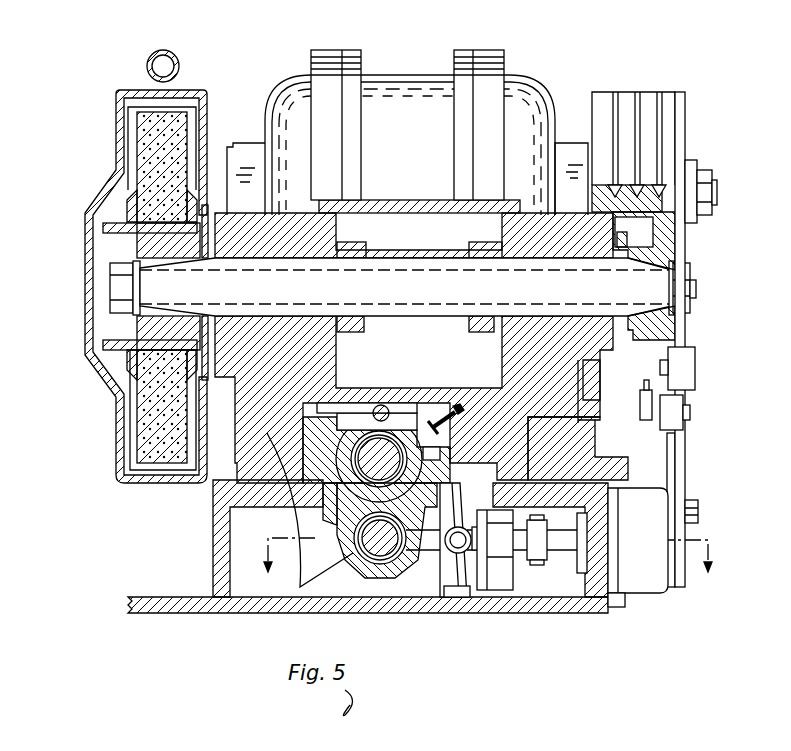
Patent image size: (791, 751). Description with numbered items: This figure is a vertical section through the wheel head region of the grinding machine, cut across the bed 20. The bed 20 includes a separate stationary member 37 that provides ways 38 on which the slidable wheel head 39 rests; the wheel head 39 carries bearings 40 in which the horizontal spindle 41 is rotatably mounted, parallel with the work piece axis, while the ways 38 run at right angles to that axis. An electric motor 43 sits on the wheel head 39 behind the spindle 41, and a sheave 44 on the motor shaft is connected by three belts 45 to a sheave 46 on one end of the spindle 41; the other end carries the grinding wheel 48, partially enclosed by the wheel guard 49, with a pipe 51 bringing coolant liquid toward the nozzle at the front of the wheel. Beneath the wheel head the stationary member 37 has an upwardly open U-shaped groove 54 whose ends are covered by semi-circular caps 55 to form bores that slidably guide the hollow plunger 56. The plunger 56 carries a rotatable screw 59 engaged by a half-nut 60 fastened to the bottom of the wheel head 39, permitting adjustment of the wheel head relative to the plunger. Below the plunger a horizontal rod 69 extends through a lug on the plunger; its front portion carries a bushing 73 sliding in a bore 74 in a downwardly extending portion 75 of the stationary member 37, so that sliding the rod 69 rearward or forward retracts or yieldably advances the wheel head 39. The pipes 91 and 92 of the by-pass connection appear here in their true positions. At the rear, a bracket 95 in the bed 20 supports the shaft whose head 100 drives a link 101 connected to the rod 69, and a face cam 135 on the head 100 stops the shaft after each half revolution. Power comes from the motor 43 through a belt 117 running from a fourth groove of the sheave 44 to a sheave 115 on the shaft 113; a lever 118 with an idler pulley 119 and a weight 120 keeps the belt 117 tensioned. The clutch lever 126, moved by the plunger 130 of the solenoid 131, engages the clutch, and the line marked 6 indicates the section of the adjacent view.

The bed 20 is at (494, 608).
The stationary member 37 is at (565, 443).
The ways 38 is at (527, 407).
The wheel head 39 is at (321, 357).
The bearings 40 is at (524, 240).
The spindle 41 is at (419, 295).
The electric motor 43 is at (405, 78).
The sheave 44 is at (592, 108).
The belts 45 is at (647, 100).
The sheave 46 is at (668, 235).
The grinding wheel 48 is at (153, 427).
The wheel guard 49 is at (84, 313).
The pipe 51 is at (162, 48).
The groove 54 is at (360, 490).
The caps 55 is at (431, 440).
The plunger 56 is at (358, 530).
The screw 59 is at (382, 450).
The half-nut 60 is at (357, 437).
The rod 69 is at (387, 570).
The bushing 73 is at (380, 540).
The bore 74 is at (381, 565).
The downwardly extending portion 75 is at (339, 508).
The pipe 91 is at (457, 406).
The pipe 92 is at (457, 423).
The bracket 95 is at (641, 577).
The head 100 is at (451, 587).
The link 101 is at (430, 545).
The shaft 113 is at (699, 512).
The sheave 115 is at (686, 470).
The belt 117 is at (676, 450).
The lever 118 is at (641, 407).
The idler pulley 119 is at (683, 422).
The weight 120 is at (695, 372).
The clutch lever 126 is at (535, 560).
The plunger 130 is at (562, 547).
The solenoid 131 is at (577, 567).
The face cam 135 is at (464, 597).
The section line 6- 6 is at (488, 567).